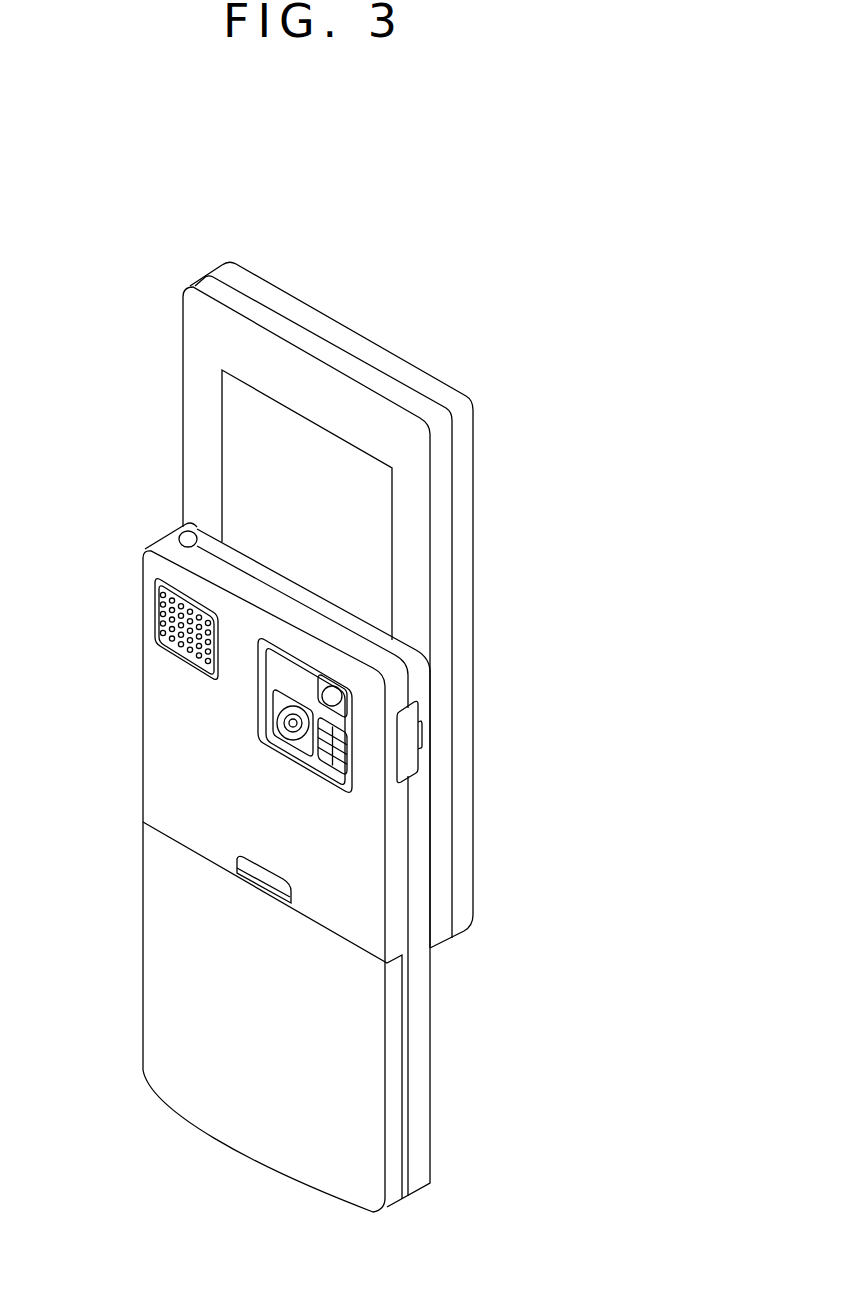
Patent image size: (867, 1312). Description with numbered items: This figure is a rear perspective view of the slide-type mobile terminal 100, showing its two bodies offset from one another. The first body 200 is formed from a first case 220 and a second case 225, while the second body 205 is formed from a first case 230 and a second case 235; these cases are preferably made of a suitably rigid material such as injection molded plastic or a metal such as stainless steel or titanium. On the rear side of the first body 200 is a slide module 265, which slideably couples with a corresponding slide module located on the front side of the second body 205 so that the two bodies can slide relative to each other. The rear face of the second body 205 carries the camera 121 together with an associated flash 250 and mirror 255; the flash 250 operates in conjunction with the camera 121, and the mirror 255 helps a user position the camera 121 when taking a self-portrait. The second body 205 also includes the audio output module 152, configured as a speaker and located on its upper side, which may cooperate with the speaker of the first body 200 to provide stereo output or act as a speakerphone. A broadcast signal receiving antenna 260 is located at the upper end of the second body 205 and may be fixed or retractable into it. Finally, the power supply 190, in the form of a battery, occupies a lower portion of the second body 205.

The mobile terminal 100 is at (486, 319).
The first body 200 is at (152, 405).
The second body 205 is at (120, 728).
The first case 220 is at (226, 265).
The second case 225 is at (208, 280).
The first case 230 is at (422, 980).
The second case 235 is at (397, 920).
The broadcast signal receiving antenna 260 is at (182, 535).
The slide module 265 is at (228, 486).
The audio output module 152 is at (156, 622).
The flash 250 is at (357, 778).
The mirror 255 is at (343, 690).
The camera 121 is at (296, 722).
The power supply 190 is at (160, 912).